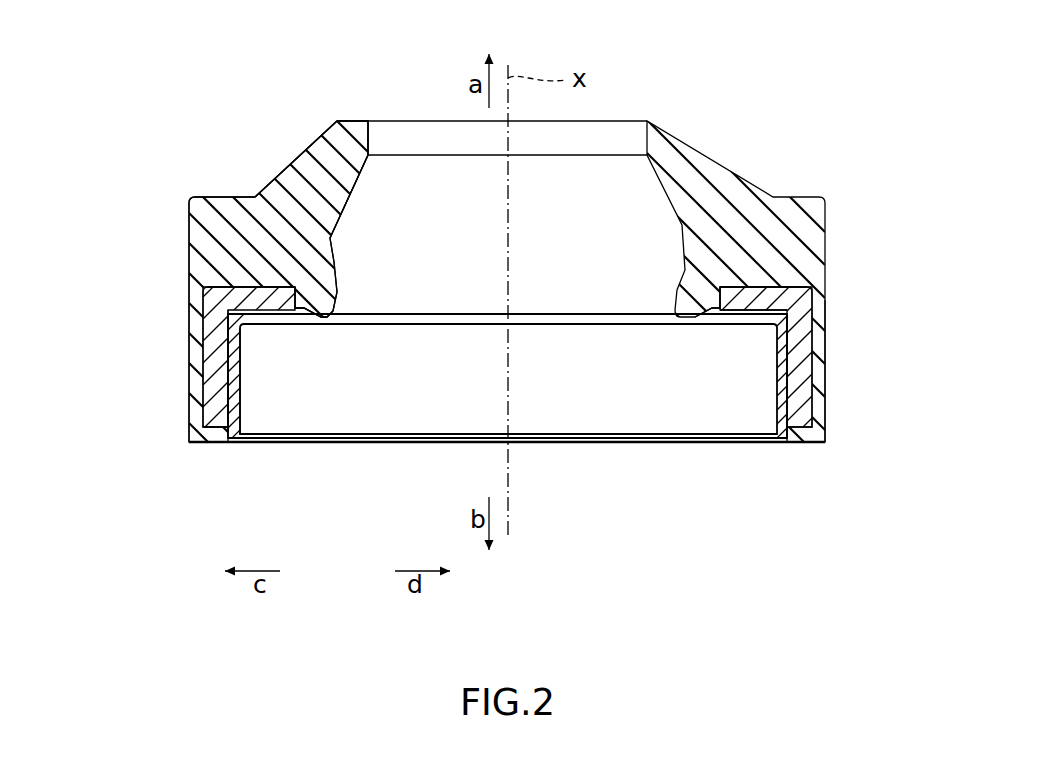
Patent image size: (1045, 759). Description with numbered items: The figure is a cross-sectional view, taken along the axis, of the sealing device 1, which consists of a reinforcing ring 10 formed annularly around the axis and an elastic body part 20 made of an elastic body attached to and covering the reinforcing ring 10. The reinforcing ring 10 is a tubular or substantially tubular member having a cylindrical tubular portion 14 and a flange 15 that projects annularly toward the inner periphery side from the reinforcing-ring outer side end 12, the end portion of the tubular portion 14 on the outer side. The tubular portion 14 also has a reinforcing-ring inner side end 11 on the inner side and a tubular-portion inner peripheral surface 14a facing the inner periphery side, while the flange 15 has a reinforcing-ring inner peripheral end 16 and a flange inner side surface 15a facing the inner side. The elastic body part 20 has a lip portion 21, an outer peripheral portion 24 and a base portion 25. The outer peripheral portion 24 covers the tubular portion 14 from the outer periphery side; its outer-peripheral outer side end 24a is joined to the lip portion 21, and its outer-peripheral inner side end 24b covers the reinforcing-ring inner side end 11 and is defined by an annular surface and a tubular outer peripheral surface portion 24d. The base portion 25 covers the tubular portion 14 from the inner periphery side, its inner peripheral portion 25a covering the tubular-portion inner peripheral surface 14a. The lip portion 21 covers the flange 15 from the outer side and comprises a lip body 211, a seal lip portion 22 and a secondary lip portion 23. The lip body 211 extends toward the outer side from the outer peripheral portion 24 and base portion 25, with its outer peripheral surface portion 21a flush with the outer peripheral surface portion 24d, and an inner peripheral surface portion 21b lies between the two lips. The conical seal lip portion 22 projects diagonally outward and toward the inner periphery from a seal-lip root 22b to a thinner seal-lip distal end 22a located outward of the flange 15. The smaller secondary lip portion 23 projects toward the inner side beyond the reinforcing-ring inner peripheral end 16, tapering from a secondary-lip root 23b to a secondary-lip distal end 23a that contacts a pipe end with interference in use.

The sealing device 1 is at (790, 106).
The reinforcing ring 10 is at (860, 242).
The reinforcing-ring inner side end 11 is at (811, 428).
The reinforcing-ring outer side end 12 is at (800, 310).
The tubular portion 14 is at (820, 377).
The tubular-portion inner peripheral surface 14a is at (788, 372).
The flange 15 is at (758, 288).
The flange inner side surface 15a is at (740, 312).
The reinforcing-ring inner peripheral end 16 is at (723, 322).
The elastic body part 20 is at (140, 276).
The lip portion 21 is at (172, 226).
The outer peripheral surface portion 21a is at (188, 250).
The inner peripheral surface portion 21b is at (330, 238).
The lip body 211 is at (205, 227).
The seal lip portion 22 is at (292, 122).
The seal-lip distal end 22a is at (357, 121).
The seal-lip root 22b is at (278, 200).
The secondary lip portion 23 is at (326, 332).
The secondary-lip distal end 23a is at (319, 309).
The secondary-lip root 23b is at (311, 298).
The outer peripheral portion 24 is at (167, 373).
The outer-peripheral outer side end 24a is at (197, 288).
The outer peripheral surface portion 24d is at (210, 316).
The outer-peripheral inner side end 24b is at (195, 433).
The base portion 25 is at (245, 386).
The inner peripheral portion 25a is at (242, 357).